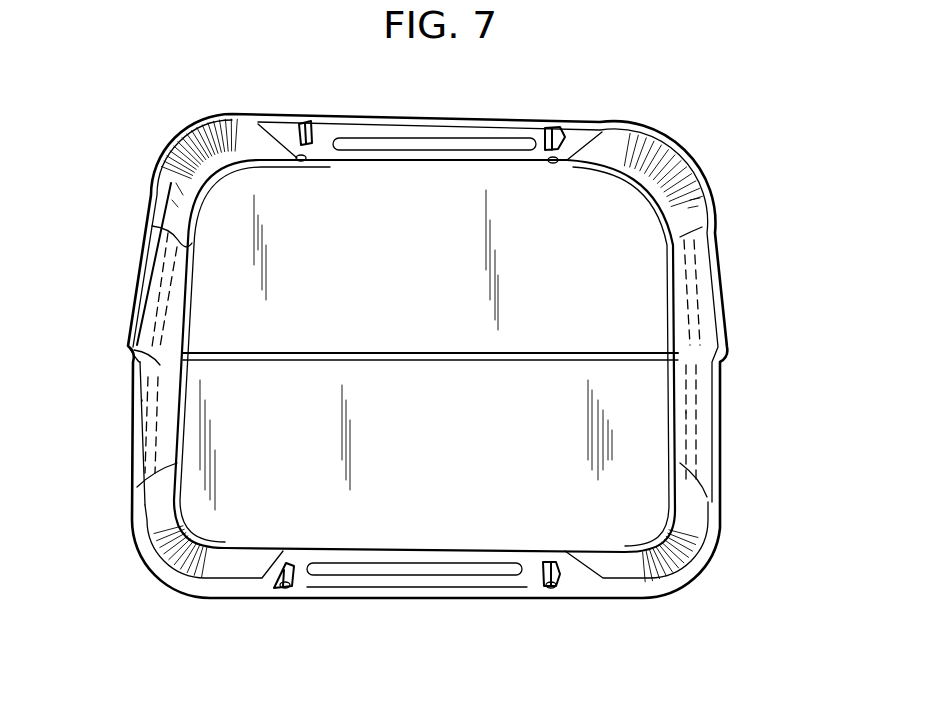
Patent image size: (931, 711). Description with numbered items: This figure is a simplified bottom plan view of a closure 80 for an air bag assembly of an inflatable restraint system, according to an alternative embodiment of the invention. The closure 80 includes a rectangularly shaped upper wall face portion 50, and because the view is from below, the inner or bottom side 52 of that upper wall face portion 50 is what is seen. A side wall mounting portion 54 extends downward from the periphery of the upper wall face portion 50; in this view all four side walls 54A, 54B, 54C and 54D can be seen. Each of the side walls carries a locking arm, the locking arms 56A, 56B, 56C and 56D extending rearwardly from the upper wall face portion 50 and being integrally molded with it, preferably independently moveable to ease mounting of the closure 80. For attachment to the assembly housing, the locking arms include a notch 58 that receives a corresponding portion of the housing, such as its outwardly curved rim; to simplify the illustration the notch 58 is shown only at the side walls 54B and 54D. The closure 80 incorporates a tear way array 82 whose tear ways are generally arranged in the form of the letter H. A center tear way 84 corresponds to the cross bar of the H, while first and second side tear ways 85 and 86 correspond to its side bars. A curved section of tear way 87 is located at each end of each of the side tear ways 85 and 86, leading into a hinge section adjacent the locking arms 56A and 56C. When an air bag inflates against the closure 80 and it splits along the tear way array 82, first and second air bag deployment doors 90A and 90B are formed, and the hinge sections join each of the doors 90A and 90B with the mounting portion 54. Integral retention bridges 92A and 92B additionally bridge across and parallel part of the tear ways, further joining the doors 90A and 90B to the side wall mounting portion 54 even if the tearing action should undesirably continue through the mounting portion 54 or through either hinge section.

The upper wall face portion 50 is at (623, 217).
The inner or bottom side 52 is at (640, 457).
The side wall mounting portion 54 is at (187, 140).
The side wall 54A is at (247, 135).
The side wall 54B is at (692, 530).
The side wall 54C is at (240, 563).
The side wall 54D is at (155, 493).
The locking arm 56A is at (493, 128).
The locking arm 56B is at (702, 278).
The locking arm 56C is at (448, 590).
The locking arm 56D is at (148, 315).
The notch 58 is at (160, 240).
The closure 80 is at (740, 207).
The tear way array 82 is at (678, 353).
The center tear way 84 is at (187, 373).
The first side tear way 85 is at (177, 433).
The second side tear way 86 is at (678, 412).
The curved section of tear way 87 is at (313, 160).
The first air bag deployment door 90A is at (450, 310).
The second air bag deployment door 90B is at (462, 462).
The retention bridge 92A is at (301, 161).
The retention bridge 92B is at (553, 163).